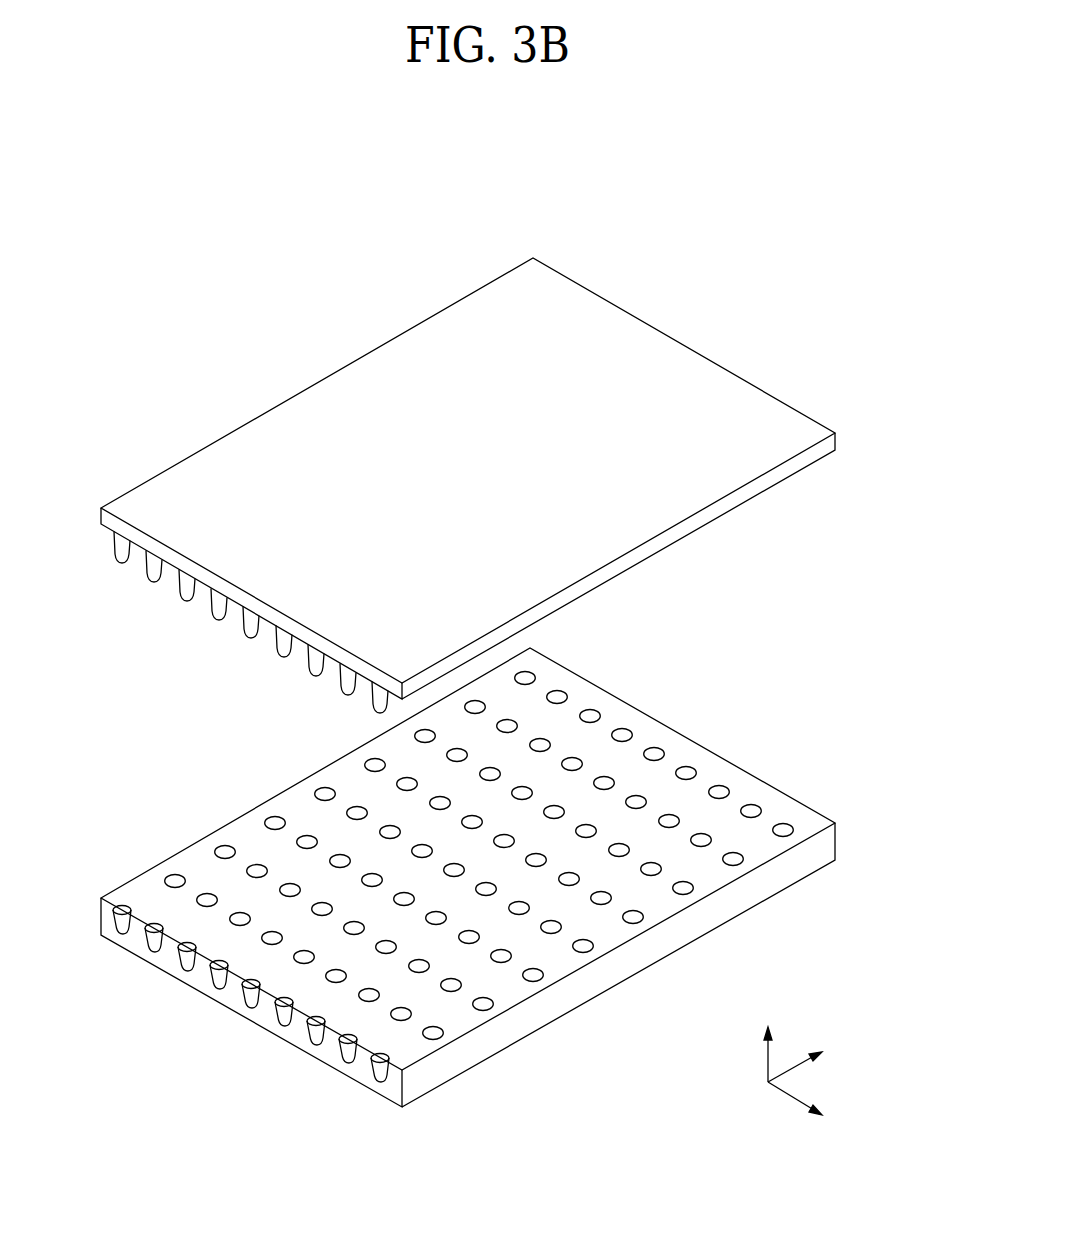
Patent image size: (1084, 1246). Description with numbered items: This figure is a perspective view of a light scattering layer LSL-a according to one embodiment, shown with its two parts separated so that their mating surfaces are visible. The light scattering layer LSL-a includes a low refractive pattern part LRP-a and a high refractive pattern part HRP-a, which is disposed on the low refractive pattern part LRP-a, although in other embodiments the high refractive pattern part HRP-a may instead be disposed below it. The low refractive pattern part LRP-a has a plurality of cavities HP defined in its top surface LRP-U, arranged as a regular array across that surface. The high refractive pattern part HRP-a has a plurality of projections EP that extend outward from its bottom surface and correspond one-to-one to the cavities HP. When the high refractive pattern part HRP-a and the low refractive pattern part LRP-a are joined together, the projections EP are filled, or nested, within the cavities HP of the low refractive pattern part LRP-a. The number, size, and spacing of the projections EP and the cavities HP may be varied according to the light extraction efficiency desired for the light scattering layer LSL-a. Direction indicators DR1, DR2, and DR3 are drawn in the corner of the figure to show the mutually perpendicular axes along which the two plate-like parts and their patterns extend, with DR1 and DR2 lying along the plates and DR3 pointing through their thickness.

The light scattering layer LSL-a is at (298, 352).
The high refractive pattern part HRP-a is at (501, 571).
The projections EP is at (117, 546).
The low refractive pattern part LRP-a is at (530, 877).
The top surface of the low refractive pattern part LRP-U is at (303, 804).
The cavities HP is at (222, 845).
The first direction DR1 is at (819, 1107).
The second direction DR2 is at (819, 1059).
The third direction DR3 is at (769, 1040).